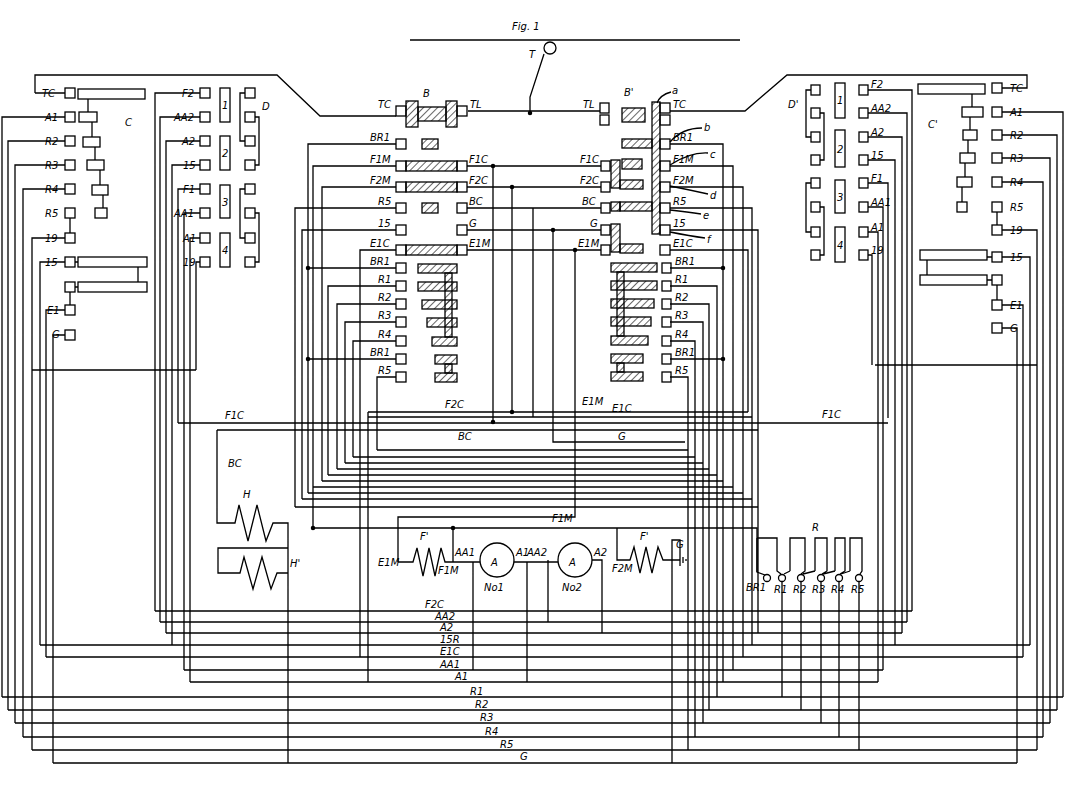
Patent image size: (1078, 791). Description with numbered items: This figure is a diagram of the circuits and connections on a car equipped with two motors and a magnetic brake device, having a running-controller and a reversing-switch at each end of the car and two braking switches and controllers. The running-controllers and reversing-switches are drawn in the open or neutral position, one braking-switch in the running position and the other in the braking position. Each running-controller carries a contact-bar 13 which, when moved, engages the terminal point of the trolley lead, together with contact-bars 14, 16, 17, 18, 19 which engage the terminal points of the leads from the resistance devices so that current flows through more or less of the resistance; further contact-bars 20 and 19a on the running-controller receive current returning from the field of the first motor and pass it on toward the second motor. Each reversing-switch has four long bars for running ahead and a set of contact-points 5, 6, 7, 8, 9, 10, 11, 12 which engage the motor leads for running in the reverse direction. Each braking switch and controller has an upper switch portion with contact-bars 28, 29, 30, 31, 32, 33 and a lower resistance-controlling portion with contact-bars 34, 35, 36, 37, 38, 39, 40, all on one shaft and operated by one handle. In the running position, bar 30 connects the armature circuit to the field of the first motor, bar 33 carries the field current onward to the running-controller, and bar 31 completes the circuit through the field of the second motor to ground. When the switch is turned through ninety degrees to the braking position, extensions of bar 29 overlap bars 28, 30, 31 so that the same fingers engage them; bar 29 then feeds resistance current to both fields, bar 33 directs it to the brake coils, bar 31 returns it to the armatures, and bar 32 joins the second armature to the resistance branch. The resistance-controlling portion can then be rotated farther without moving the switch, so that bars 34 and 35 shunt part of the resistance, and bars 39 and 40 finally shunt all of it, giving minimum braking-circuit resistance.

The contact-point 5 is at (536, 86).
The contact-point 6 is at (532, 118).
The contact-point 7 is at (534, 145).
The contact-point 8 is at (532, 165).
The contact-point 9 is at (532, 188).
The contact-point 10 is at (532, 210).
The contact-point 11 is at (535, 240).
The contact-point 12 is at (530, 268).
The contact-bar 13 is at (112, 96).
The contact-bar 14 is at (531, 108).
The contact-bar 16 is at (530, 133).
The contact-bar 17 is at (531, 156).
The contact-bar 18 is at (532, 180).
The contact-bar 19 is at (531, 275).
The contact-bar 19a is at (532, 259).
The contact-bar 20 is at (108, 292).
The contact-bar 28 is at (441, 107).
The contact-bar 29 is at (537, 137).
The contact-bar 30 is at (434, 161).
The contact-bar 31 is at (420, 193).
The contact-bar 32 is at (432, 207).
The contact-bar 33 is at (524, 239).
The contact-bar 34 is at (537, 268).
The contact-bar 35 is at (537, 286).
The contact-bar 36 is at (538, 304).
The contact-bar 37 is at (539, 322).
The contact-bar 38 is at (540, 341).
The contact-bar 39 is at (539, 359).
The contact-bar 40 is at (539, 377).